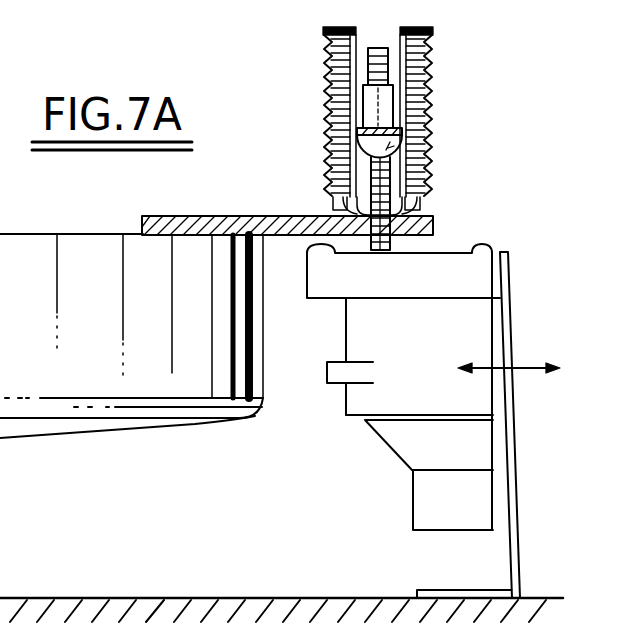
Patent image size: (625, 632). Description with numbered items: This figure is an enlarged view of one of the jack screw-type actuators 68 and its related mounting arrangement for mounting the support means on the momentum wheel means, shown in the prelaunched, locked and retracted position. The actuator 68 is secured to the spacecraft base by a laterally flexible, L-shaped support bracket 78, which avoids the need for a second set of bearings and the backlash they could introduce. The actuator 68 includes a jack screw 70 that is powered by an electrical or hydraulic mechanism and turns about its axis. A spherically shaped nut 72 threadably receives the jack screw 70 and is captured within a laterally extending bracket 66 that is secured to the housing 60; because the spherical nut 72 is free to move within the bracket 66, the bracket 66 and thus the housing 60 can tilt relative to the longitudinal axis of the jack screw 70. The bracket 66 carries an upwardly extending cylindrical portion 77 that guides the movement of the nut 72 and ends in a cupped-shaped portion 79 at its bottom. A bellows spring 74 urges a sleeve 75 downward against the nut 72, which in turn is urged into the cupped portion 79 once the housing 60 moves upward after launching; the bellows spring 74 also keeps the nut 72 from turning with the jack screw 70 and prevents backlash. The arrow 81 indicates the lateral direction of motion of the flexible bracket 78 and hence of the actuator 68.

The housing 60 is at (50, 232).
The bracket 66 is at (223, 205).
The jack screw-type actuator 68 is at (358, 327).
The jack screw 70 is at (384, 188).
The spherical nut 72 is at (425, 138).
The bellows spring 74 is at (428, 72).
The sleeve 75 is at (390, 103).
The cylindrical portion 77 is at (330, 98).
The flexible support bracket 78 is at (520, 518).
The cupped-shaped portion 79 is at (397, 208).
The lateral direction of motion 81 is at (520, 365).